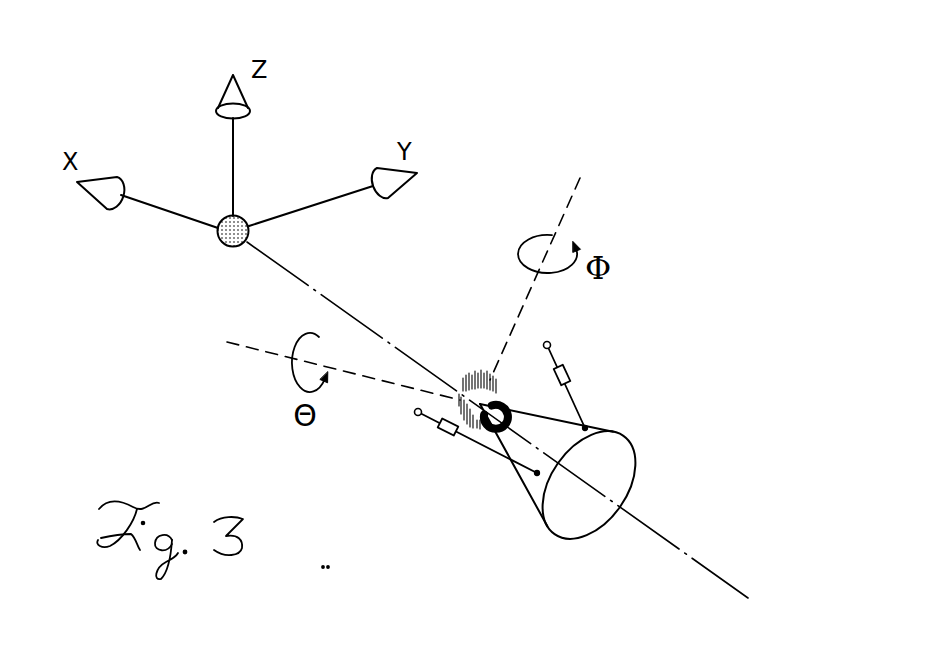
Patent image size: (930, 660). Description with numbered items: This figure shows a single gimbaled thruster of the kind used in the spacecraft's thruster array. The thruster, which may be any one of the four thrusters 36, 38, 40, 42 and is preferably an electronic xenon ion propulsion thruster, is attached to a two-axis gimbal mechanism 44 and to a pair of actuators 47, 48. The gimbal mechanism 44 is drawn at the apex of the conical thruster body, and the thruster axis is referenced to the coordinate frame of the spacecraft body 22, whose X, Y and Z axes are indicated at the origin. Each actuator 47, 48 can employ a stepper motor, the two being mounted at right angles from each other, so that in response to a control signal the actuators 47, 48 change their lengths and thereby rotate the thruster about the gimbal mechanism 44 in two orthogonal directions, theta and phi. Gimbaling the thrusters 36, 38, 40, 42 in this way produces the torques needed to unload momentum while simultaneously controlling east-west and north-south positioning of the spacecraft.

The spacecraft body 22 is at (221, 244).
The thruster 36 is at (534, 503).
The thruster 38 is at (534, 503).
The thruster 40 is at (534, 503).
The thruster 42 is at (613, 577).
The two-axis gimbal mechanism 44 is at (479, 370).
The actuator 47 is at (443, 432).
The actuator 48 is at (568, 375).